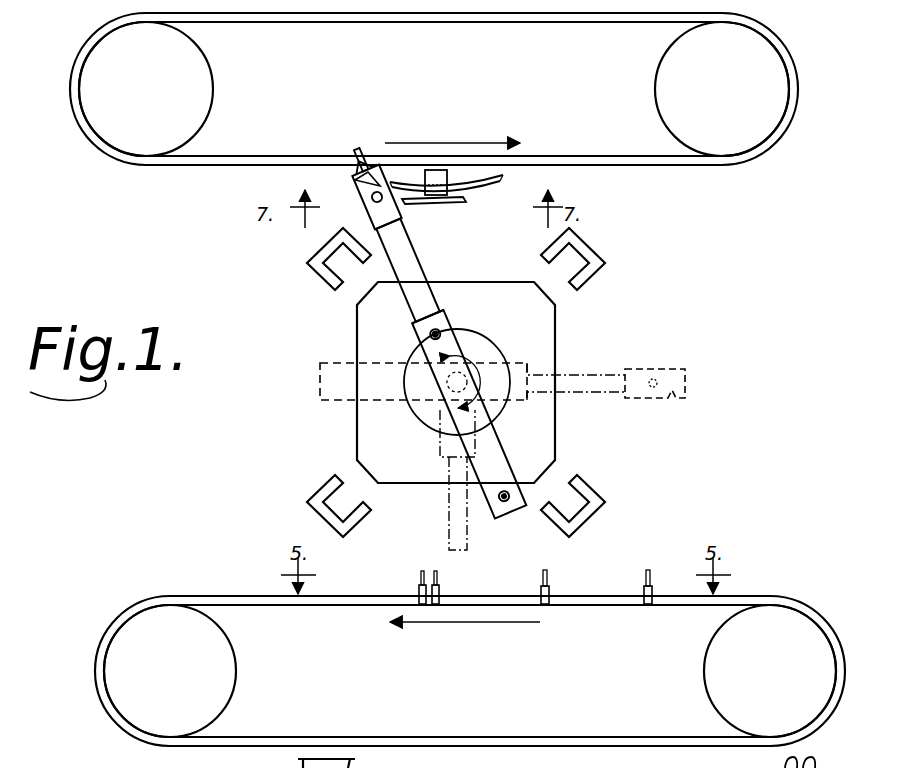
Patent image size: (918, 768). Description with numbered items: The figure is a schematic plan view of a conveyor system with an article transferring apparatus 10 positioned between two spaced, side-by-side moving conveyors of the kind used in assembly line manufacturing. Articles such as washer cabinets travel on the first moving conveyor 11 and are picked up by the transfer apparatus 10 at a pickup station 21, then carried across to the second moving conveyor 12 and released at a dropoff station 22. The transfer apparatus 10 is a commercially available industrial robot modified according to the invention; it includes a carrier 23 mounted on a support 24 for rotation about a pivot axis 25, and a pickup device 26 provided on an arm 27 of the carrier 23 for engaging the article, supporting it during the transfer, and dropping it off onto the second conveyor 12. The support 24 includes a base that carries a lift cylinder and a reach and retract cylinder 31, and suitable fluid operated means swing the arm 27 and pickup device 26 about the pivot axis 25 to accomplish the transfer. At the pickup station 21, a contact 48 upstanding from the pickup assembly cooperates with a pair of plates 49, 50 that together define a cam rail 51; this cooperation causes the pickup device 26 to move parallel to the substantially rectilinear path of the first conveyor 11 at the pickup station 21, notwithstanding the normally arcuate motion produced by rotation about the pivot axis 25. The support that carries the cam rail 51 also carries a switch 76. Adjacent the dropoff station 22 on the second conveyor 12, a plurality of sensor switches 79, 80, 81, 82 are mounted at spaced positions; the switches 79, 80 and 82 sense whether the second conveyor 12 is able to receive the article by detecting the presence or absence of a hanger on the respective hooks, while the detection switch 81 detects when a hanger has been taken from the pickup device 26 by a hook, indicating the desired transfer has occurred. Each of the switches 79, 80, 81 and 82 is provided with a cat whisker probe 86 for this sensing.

The transfer apparatus 10 is at (617, 312).
The first moving conveyor 11 is at (801, 62).
The second moving conveyor 12 is at (833, 611).
The pickup station 21 is at (458, 179).
The dropoff station 22 is at (526, 573).
The carrier 23 is at (408, 333).
The support 24 is at (383, 413).
The pivot axis 25 is at (453, 385).
The pickup device 26 is at (353, 182).
The arm 27 is at (403, 238).
The reach and retract cylinder 31 is at (494, 448).
The contact 48 is at (368, 203).
The plate 49 is at (492, 180).
The plate 50 is at (465, 201).
The cam rail 51 is at (466, 174).
The switch 76 is at (378, 150).
The sensor switch 79 is at (643, 592).
The sensor switch 80 is at (550, 590).
The detection switch 81 is at (440, 590).
The sensor switch 82 is at (418, 590).
The cat whisker probe 86 is at (553, 563).